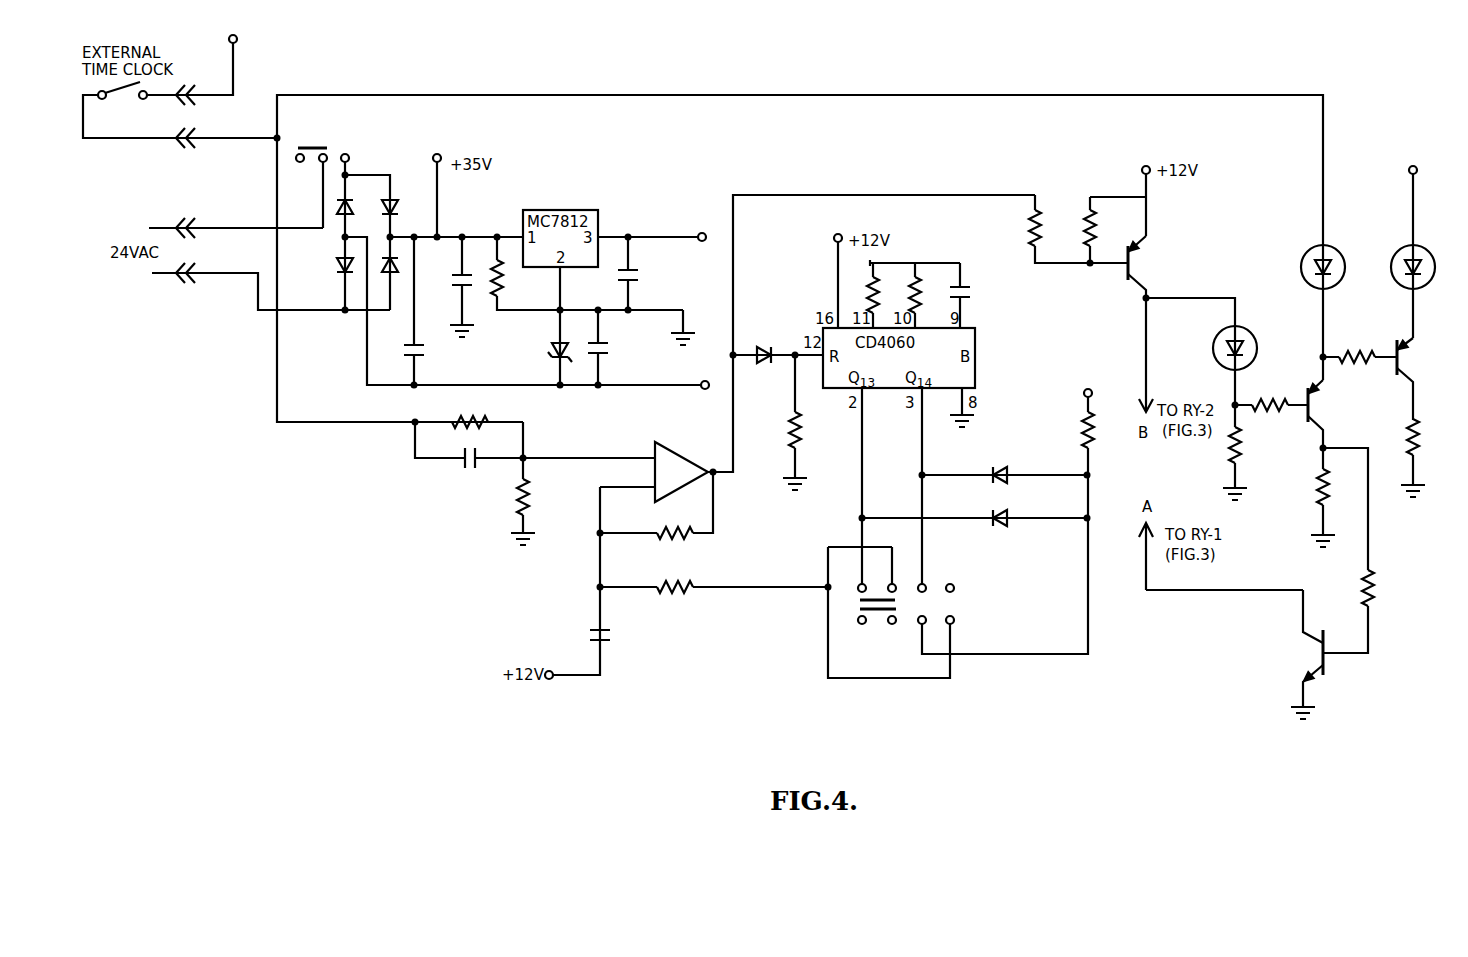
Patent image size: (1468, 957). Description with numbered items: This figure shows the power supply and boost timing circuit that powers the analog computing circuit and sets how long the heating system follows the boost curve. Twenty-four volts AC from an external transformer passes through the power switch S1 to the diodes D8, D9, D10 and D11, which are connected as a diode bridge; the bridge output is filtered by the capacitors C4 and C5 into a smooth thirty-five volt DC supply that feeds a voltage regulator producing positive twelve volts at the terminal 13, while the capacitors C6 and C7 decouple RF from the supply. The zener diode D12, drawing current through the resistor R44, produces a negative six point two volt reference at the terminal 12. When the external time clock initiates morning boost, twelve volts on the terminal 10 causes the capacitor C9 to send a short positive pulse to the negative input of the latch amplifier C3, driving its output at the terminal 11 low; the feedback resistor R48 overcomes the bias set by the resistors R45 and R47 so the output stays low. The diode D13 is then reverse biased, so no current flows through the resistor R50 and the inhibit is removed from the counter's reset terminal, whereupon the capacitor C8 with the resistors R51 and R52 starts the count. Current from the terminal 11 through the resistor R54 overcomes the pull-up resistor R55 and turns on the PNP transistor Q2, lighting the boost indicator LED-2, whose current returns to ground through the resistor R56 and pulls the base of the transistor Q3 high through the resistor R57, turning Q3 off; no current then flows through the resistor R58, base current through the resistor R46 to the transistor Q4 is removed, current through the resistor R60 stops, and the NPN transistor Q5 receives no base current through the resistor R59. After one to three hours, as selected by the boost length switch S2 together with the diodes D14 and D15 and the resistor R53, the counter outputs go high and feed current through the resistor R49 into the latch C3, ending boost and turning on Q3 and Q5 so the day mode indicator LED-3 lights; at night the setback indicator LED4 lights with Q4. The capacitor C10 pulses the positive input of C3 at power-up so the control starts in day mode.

The terminal 10 is at (216, 68).
The terminal 11 is at (871, 348).
The terminal 12 is at (687, 388).
The terminal 13 is at (660, 228).
The power switch S1 is at (308, 188).
The boost length switch S2 is at (910, 637).
The diode D8 is at (355, 196).
The diode D9 is at (330, 267).
The diode D10 is at (404, 196).
The diode D11 is at (402, 280).
The zener diode D12 is at (543, 353).
The diode D13 is at (778, 344).
The diode D14 is at (1005, 465).
The diode D15 is at (975, 532).
The latch amplifier C3 is at (681, 472).
The capacitor C4 is at (403, 311).
The capacitor C5 is at (453, 286).
The capacitor C6 is at (609, 348).
The capacitor C7 is at (638, 275).
The capacitor C8 is at (973, 295).
The capacitor C9 is at (535, 460).
The capacitor C10 is at (583, 639).
The resistor R44 is at (587, 272).
The resistor R45 is at (450, 412).
The resistor R46 is at (1360, 345).
The resistor R47 is at (539, 483).
The feedback resistor R48 is at (655, 517).
The resistor R49 is at (714, 599).
The resistor R50 is at (809, 422).
The resistor R51 is at (887, 295).
The resistor R52 is at (928, 295).
The resistor R53 is at (1012, 513).
The resistor R54 is at (1058, 229).
The pull-up resistor R55 is at (1110, 232).
The resistor R56 is at (1249, 452).
The resistor R57 is at (1271, 394).
The resistor R58 is at (1307, 496).
The resistor R59 is at (1368, 550).
The resistor R60 is at (1398, 458).
The PNP transistor Q2 is at (1149, 267).
The PNP transistor Q3 is at (1325, 424).
The PNP transistor Q4 is at (1418, 379).
The NPN transistor Q5 is at (1303, 654).
The boost indicator light LED-2 is at (1221, 353).
The day mode indicator light LED-3 is at (1296, 259).
The setback indicator light LED4 is at (1393, 242).